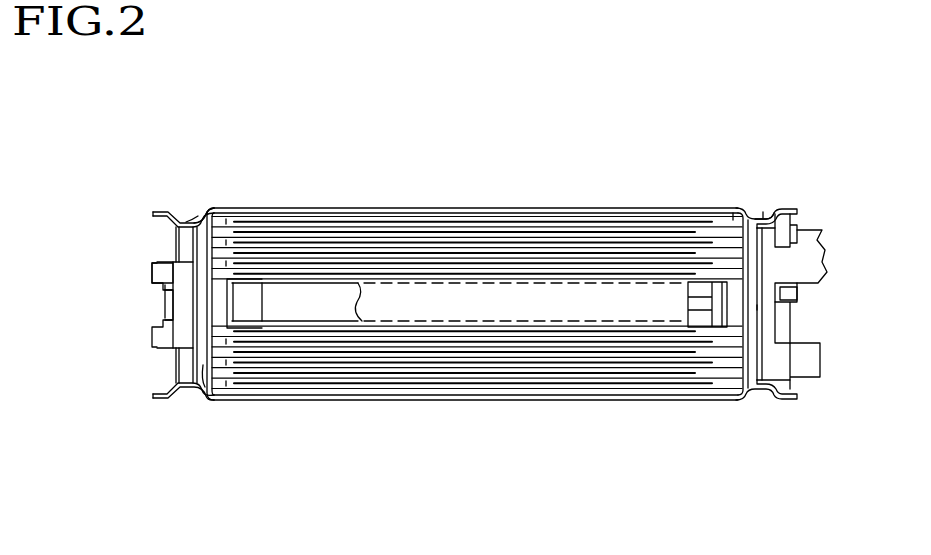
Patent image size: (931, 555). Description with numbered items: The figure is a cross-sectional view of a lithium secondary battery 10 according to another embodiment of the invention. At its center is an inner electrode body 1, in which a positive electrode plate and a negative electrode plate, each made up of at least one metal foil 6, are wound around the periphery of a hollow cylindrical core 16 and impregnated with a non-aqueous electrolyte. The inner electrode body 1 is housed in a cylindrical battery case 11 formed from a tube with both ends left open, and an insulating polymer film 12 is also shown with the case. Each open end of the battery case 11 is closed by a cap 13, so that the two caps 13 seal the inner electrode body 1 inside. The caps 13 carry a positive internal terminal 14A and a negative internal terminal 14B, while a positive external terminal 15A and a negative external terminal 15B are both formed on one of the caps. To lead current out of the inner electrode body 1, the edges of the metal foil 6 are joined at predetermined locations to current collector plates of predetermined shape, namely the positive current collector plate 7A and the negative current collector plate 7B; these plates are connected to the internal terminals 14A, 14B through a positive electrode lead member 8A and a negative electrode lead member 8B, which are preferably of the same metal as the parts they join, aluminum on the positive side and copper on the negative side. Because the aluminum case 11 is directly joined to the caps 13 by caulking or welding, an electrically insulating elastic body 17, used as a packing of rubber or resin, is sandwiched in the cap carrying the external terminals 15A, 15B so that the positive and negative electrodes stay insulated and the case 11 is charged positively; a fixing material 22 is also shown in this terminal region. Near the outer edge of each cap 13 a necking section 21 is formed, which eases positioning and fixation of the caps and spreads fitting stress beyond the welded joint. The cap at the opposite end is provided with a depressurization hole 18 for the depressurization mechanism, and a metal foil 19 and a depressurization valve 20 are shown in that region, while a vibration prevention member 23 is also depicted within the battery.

The inner electrode body 1 is at (479, 356).
The metal foil 6 is at (737, 208).
The positive current collector plate 7A is at (205, 365).
The negative current collector plate 7B is at (763, 210).
The positive electrode lead member 8A is at (198, 220).
The negative electrode lead member 8B is at (757, 307).
The battery 10 is at (492, 178).
The battery case 11 is at (622, 207).
The insulating polymer film 12 is at (617, 394).
The cap 13 is at (132, 310).
The positive internal terminal 14A is at (168, 262).
The negative internal terminal 14B is at (767, 302).
The positive external terminal 15A is at (815, 367).
The negative external terminal 15B is at (812, 246).
The core 16 is at (334, 283).
The elastic body (packing) 17 is at (813, 210).
The depressurization hole 18 is at (200, 299).
The metal foil 19 is at (168, 310).
The depressurization valve 20 is at (146, 292).
The necking section 21 is at (189, 206).
The fixing material 22 is at (813, 290).
The vibration prevention member 23 is at (702, 312).